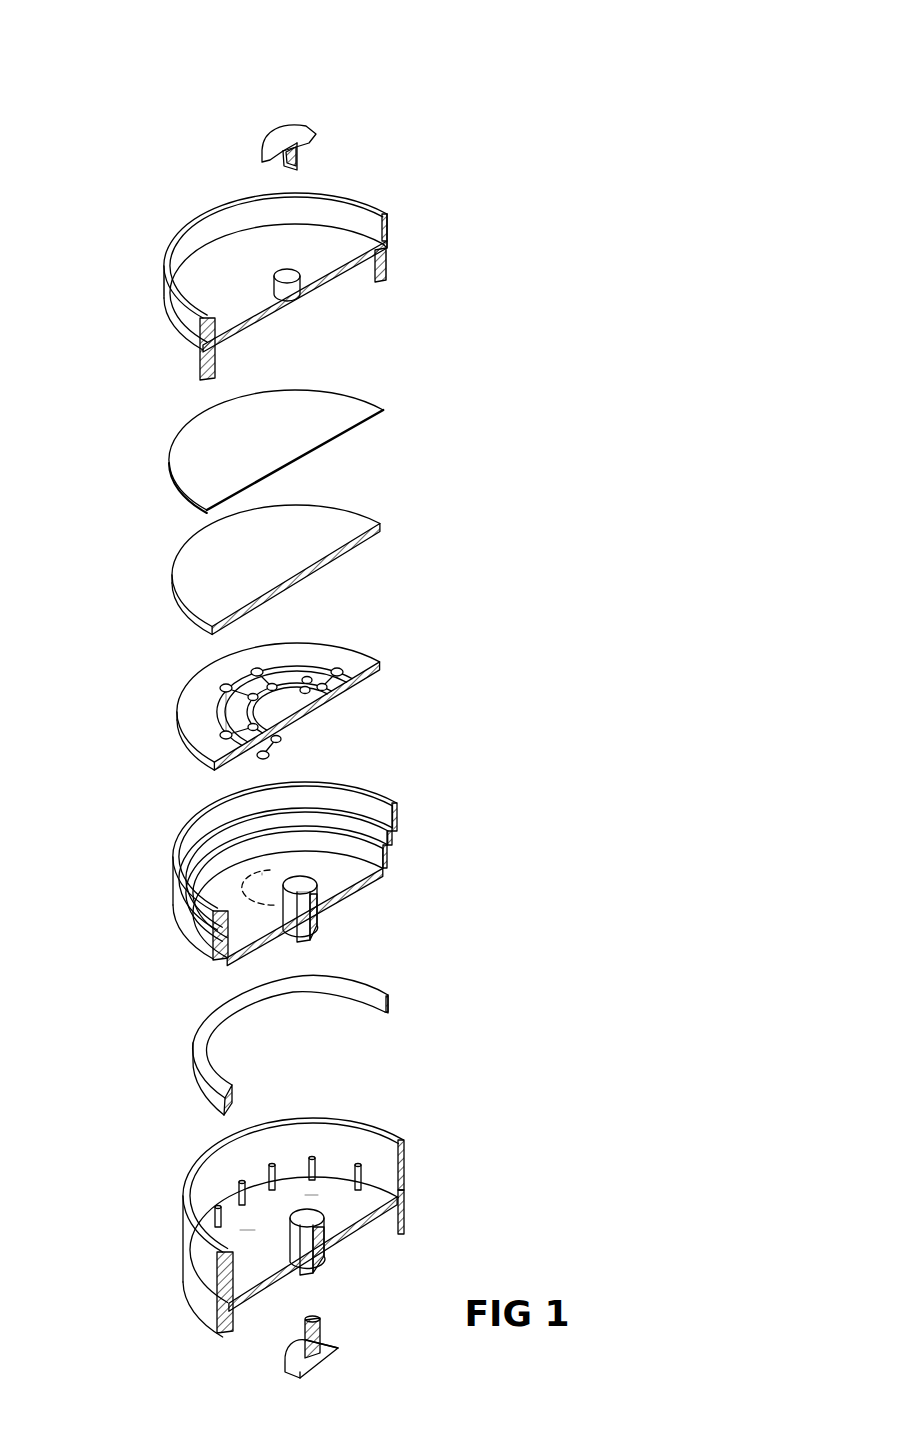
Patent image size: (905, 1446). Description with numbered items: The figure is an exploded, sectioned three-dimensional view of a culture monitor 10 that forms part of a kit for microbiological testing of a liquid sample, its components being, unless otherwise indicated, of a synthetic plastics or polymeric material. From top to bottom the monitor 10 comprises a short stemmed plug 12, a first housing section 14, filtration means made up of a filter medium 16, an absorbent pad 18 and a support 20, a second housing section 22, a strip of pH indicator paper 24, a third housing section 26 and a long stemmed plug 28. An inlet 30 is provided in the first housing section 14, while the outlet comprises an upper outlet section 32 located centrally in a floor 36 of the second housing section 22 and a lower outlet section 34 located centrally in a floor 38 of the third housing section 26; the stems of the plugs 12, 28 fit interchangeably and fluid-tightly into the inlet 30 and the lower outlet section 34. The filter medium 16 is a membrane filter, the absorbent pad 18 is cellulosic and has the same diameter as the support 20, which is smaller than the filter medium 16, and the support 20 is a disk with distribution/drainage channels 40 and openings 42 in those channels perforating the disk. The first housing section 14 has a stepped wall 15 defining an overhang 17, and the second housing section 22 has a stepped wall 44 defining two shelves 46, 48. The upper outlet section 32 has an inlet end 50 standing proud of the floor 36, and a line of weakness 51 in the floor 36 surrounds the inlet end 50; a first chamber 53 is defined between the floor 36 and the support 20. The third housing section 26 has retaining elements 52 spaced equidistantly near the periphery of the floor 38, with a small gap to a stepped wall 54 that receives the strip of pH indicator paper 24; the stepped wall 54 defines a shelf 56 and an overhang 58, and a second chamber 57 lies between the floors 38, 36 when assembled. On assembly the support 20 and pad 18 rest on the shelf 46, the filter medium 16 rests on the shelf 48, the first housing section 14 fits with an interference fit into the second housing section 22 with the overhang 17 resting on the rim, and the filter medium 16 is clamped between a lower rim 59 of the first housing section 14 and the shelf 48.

The culture monitor 10 is at (528, 180).
The short stemmed plug 12 is at (287, 126).
The first housing section 14 is at (264, 246).
The stepped wall 15 is at (178, 325).
The filter medium 16 is at (388, 400).
The overhang 17 is at (400, 252).
The absorbent pad 18 is at (385, 507).
The support 20 is at (304, 675).
The second housing section 22 is at (298, 845).
The strip of pH indicator paper 24 is at (394, 1003).
The third housing section 26 is at (310, 1186).
The long stemmed plug 28 is at (334, 1337).
The inlet 30 is at (299, 299).
The upper outlet section 32 is at (325, 930).
The lower outlet section 34 is at (329, 1254).
The floor 36 is at (330, 872).
The floor 38 is at (248, 1232).
The distribution/drainage channels 40 is at (262, 664).
The openings 42 is at (212, 694).
The stepped wall 44 is at (199, 913).
The shelf 46 is at (352, 832).
The shelf 48 is at (326, 815).
The inlet end 50 is at (300, 893).
The line of weakness 51 is at (268, 892).
The retaining elements 52 is at (272, 1163).
The first chamber 53 is at (266, 876).
The stepped wall 54 is at (203, 1255).
The shelf 56 is at (405, 1168).
The second chamber 57 is at (315, 1195).
The overhang 58 is at (405, 1207).
The lower rim 59 is at (400, 290).